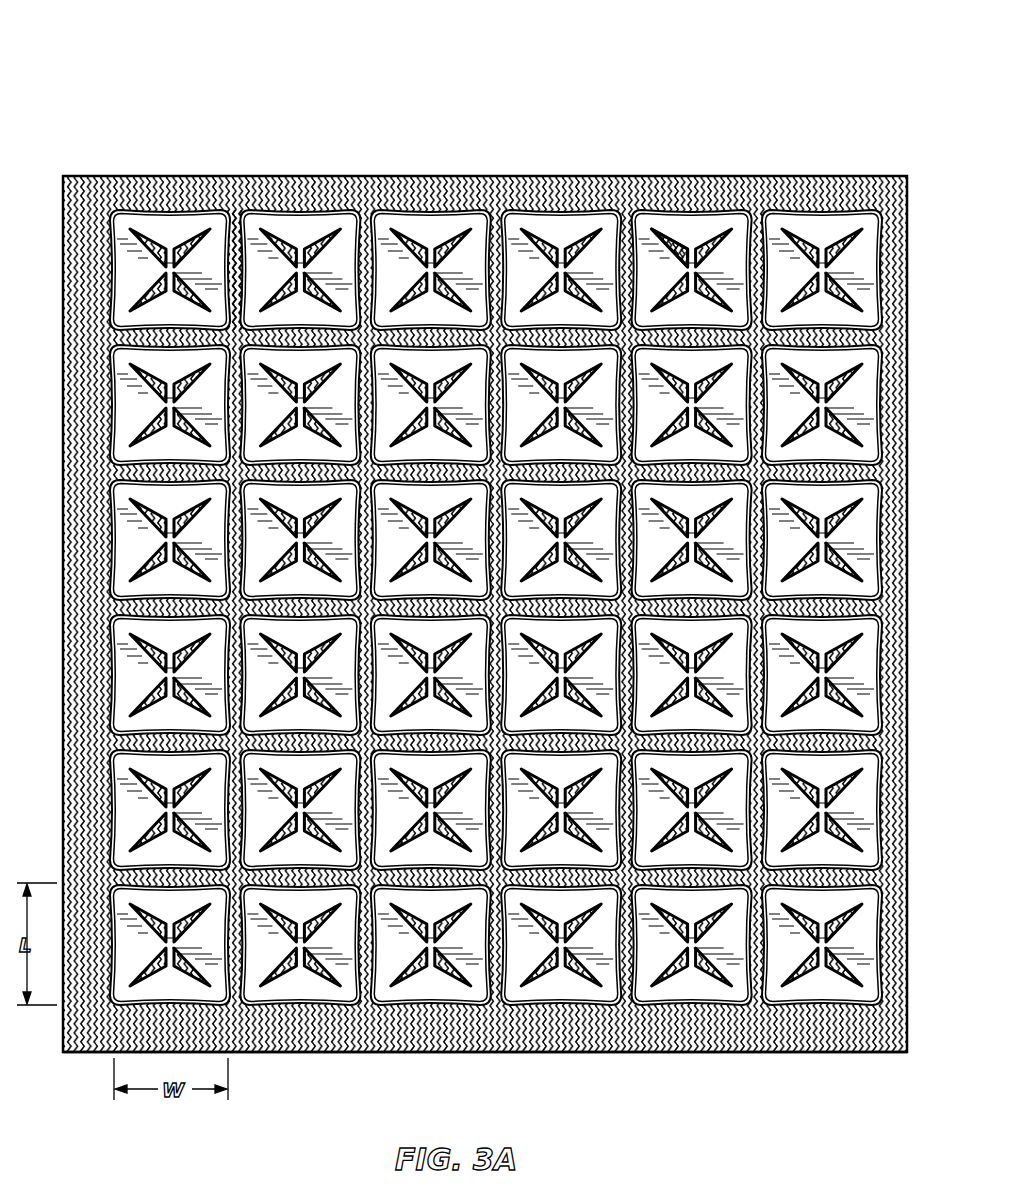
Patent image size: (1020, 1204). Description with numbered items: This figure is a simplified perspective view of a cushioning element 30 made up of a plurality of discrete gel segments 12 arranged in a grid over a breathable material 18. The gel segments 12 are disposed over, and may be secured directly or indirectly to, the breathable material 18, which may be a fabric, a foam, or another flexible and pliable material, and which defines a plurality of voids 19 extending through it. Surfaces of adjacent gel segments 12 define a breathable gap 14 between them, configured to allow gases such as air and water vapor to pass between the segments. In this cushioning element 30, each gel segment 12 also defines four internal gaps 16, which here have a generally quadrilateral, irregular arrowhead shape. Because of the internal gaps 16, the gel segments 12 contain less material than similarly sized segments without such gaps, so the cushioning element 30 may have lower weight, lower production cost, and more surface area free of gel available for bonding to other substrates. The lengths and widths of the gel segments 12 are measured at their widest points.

The cushioning element 30 is at (465, 580).
The gel segment 12 is at (297, 228).
The breathable gap 14 is at (232, 214).
The internal gap 16 is at (676, 250).
The breathable material 18 is at (846, 182).
The voids 19 is at (594, 1053).